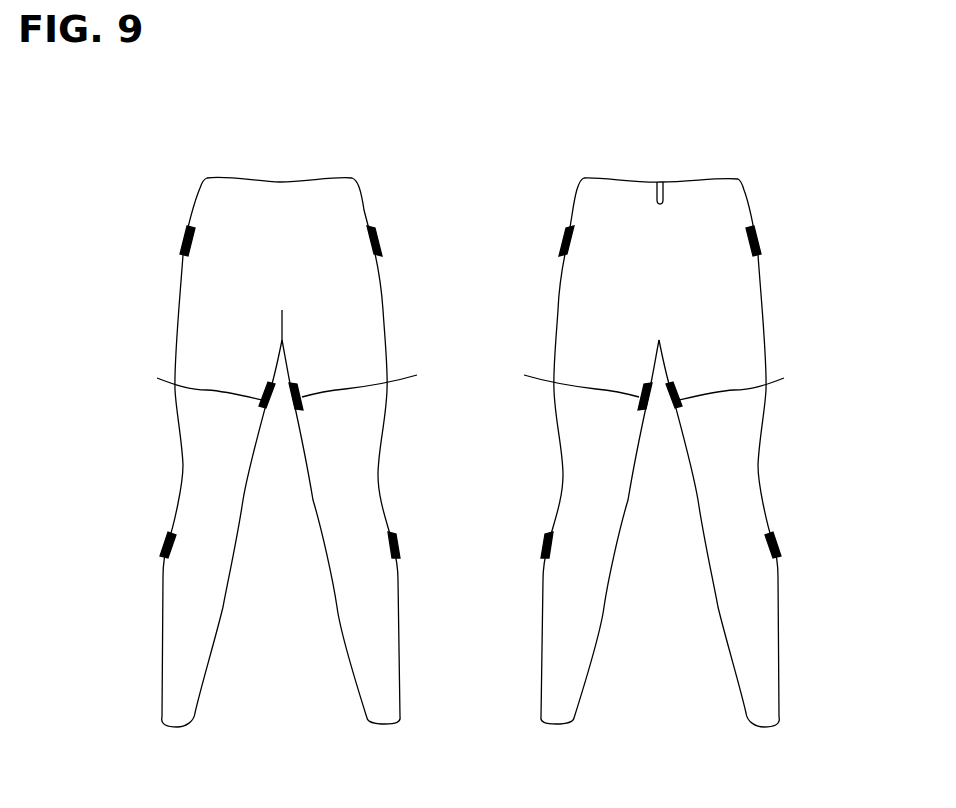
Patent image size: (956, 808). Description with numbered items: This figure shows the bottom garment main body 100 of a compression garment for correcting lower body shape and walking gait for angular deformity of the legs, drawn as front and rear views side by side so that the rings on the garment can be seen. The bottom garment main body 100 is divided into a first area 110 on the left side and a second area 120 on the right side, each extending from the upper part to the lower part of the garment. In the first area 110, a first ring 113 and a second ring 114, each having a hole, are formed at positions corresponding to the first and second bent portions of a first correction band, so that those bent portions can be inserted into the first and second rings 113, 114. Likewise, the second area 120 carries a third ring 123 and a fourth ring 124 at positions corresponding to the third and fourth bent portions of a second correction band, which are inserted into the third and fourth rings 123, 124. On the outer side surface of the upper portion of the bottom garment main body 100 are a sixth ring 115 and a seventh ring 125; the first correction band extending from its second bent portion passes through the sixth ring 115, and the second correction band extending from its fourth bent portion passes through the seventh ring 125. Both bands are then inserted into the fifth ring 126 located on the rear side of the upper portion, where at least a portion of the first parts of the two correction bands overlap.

The bottom garment main body 100 is at (190, 188).
The first area 110 is at (177, 608).
The first ring 113 is at (165, 543).
The second ring 114 is at (470, 384).
The sixth ring 115 is at (185, 250).
The second area 120 is at (382, 662).
The third ring 123 is at (397, 538).
The fourth ring 124 is at (470, 381).
The seventh ring 125 is at (380, 243).
The fifth ring 126 is at (661, 182).